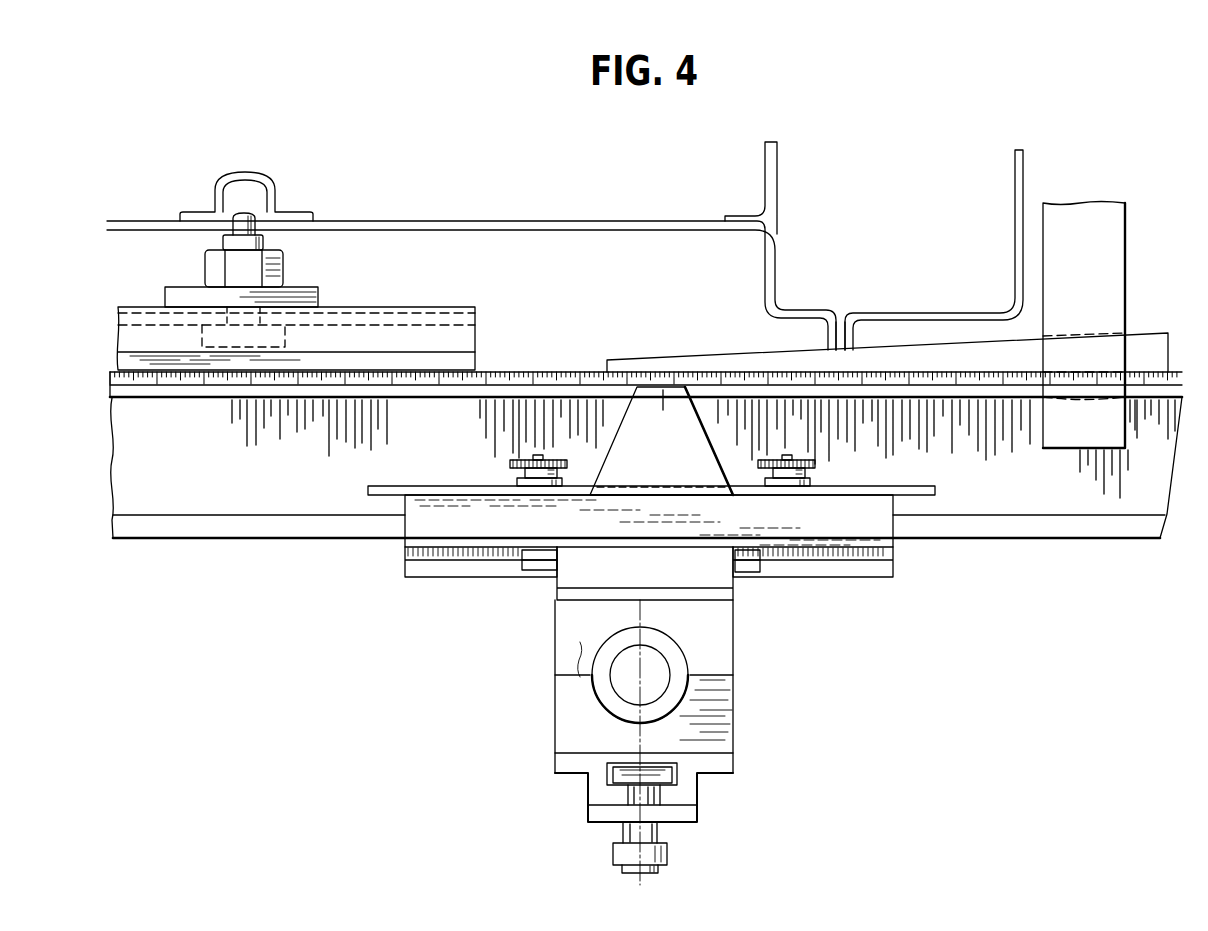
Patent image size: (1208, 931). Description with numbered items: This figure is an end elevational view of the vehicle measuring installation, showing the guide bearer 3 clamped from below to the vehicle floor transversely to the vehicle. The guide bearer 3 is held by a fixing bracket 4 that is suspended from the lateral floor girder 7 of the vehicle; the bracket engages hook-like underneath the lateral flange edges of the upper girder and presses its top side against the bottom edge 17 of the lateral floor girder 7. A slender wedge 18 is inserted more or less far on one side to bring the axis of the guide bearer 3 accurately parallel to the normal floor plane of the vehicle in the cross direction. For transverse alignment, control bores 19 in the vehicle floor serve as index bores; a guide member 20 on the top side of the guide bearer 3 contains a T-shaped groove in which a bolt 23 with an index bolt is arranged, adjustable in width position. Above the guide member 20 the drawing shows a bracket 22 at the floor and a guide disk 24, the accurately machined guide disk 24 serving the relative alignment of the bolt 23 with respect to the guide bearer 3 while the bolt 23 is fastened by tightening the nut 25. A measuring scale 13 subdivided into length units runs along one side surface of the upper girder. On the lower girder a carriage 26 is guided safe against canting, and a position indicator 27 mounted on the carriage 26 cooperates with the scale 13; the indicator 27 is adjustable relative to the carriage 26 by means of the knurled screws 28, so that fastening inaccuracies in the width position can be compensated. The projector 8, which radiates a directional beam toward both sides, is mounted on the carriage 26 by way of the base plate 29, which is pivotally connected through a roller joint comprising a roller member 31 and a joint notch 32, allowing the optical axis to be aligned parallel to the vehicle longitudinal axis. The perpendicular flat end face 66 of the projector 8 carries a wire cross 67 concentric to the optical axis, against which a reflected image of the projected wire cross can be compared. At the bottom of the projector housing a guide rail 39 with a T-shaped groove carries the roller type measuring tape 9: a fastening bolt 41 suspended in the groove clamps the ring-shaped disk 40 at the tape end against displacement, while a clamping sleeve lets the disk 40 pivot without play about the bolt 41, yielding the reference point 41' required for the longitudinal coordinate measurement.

The guide bearer 3 is at (1188, 438).
The fixing bracket 4 is at (1113, 313).
The lateral floor girder 7 is at (1013, 246).
The projector 8 is at (736, 706).
The roller type measuring tape 9 is at (662, 843).
The measuring scale 13 is at (494, 378).
The bottom edge 17 is at (836, 333).
The wedge 18 is at (1165, 356).
The control bore 19 is at (262, 219).
The guide member 20 is at (426, 306).
The bracket 22 is at (248, 222).
The bolt 23 is at (224, 242).
The plate 24 is at (313, 298).
The nut 25 is at (212, 271).
The carriage 26 is at (830, 526).
The position indicator 27 is at (676, 450).
The knurled screws 28 is at (519, 460).
The base plate 29 is at (563, 594).
The roller member 31 is at (755, 571).
The joint notch 32 is at (845, 571).
The guide rail 39 is at (722, 764).
The ring-shaped disk 40 is at (617, 851).
The fastening bolt 41 is at (666, 877).
The reference point 41' is at (602, 792).
The end face 66 is at (588, 726).
The wire cross 67 is at (640, 608).